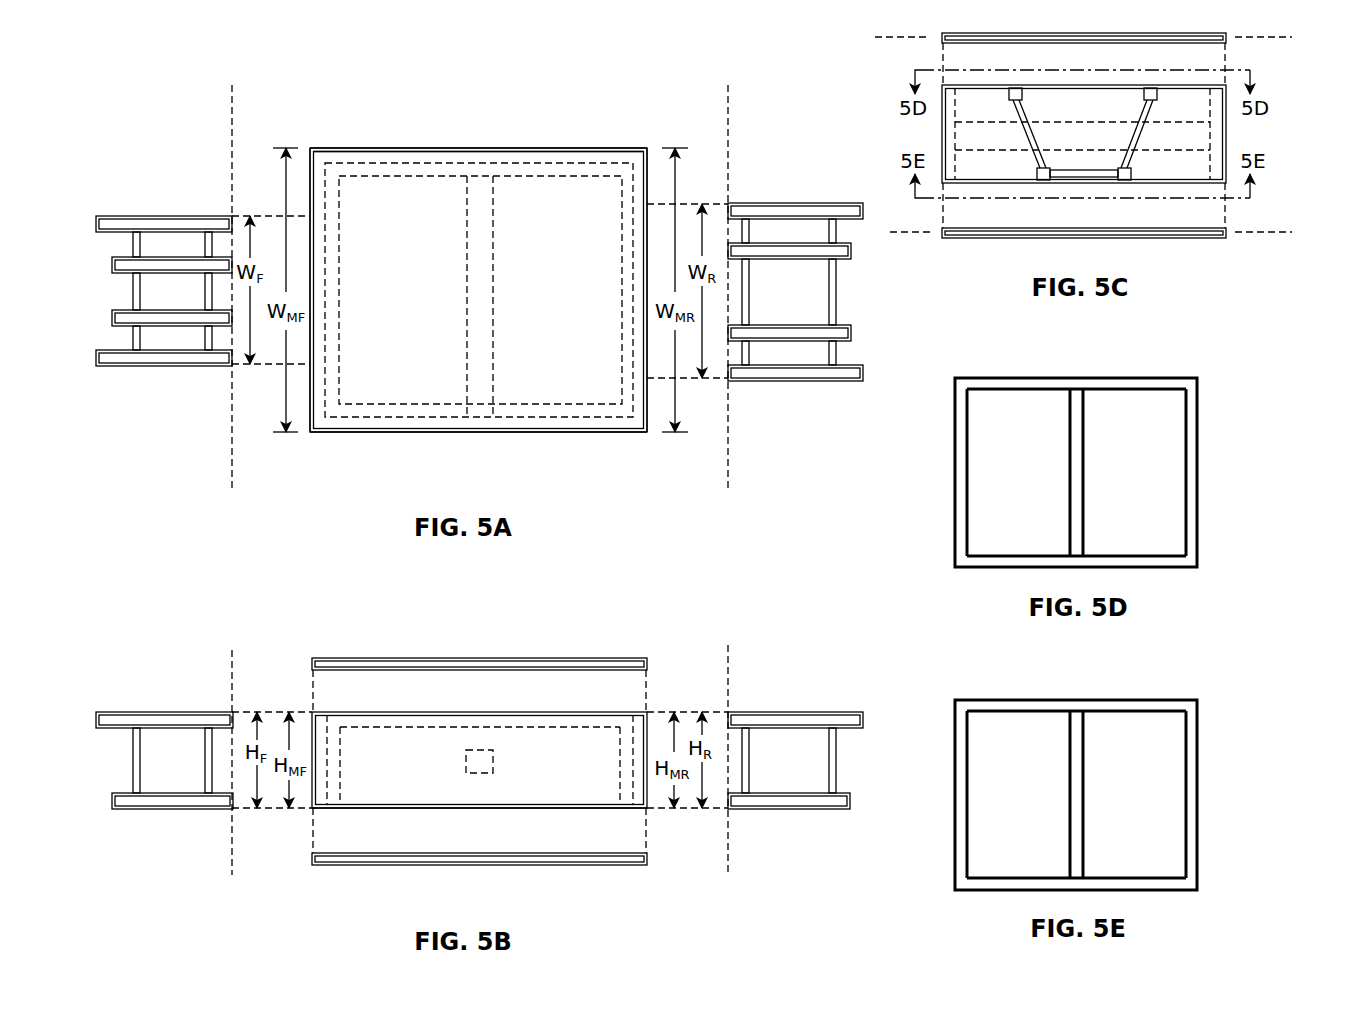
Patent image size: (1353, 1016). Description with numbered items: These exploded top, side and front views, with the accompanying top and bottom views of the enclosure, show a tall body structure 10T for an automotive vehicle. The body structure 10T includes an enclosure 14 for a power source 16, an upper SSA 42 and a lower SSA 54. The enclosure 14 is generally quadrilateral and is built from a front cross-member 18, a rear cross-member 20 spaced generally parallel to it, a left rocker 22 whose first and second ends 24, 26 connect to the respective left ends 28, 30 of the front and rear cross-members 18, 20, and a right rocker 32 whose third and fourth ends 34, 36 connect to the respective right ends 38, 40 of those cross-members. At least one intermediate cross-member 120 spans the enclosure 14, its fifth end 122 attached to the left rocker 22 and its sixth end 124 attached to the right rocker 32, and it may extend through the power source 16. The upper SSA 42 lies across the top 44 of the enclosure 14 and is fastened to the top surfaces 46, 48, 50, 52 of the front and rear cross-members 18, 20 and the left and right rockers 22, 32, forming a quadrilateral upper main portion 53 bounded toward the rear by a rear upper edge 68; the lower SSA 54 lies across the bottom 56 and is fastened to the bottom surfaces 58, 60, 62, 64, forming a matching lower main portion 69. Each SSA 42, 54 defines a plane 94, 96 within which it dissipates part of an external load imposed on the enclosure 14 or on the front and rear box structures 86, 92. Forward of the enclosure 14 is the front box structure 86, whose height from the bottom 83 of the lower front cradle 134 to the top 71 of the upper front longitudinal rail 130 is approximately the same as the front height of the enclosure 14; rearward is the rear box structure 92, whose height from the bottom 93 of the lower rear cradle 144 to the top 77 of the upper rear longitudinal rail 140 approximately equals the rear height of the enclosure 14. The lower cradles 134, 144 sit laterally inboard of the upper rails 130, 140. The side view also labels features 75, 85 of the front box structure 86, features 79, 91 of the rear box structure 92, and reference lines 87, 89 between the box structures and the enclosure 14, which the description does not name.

In FIG. 5A, the tall body structure 10T is at (185, 92).
In FIG. 5B, the tall body structure 10T is at (187, 595).
In FIG. 5C, the tall body structure 10T is at (1288, 105).
In FIG. 5A, the enclosure 14 is at (546, 268).
In FIG. 5B, the enclosure 14 is at (458, 752).
In FIG. 5D, the enclosure 14 is at (1115, 444).
In FIG. 5E, the enclosure 14 is at (1115, 766).
In FIG. 5A, the power source 16 is at (530, 178).
In FIG. 5B, the power source 16 is at (513, 727).
In FIG. 5A, the front cross-member 18 is at (318, 307).
In FIG. 5B, the front cross-member 18 is at (318, 762).
In FIG. 5C, the front cross-member 18 is at (950, 138).
In FIG. 5D, the front cross-member 18 is at (913, 472).
In FIG. 5E, the front cross-member 18 is at (911, 795).
In FIG. 5A, the rear cross-member 20 is at (638, 325).
In FIG. 5B, the rear cross-member 20 is at (642, 765).
In FIG. 5D, the rear cross-member 20 is at (1235, 472).
In FIG. 5E, the rear cross-member 20 is at (1247, 794).
In FIG. 5A, the left rocker 22 is at (440, 423).
In FIG. 5B, the left rocker 22 is at (512, 786).
In FIG. 5C, the left rocker 22 is at (1215, 135).
In FIG. 5D, the left rocker 22 is at (1076, 521).
In FIG. 5E, the left rocker 22 is at (1067, 677).
In FIG. 5A, the first end 24 is at (333, 422).
In FIG. 5A, the second end 26 is at (625, 425).
In FIG. 5A, the left end of front cross-member 28 is at (320, 412).
In FIG. 5A, the left end of rear cross-member 30 is at (635, 408).
In FIG. 5A, the right rocker 32 is at (415, 150).
In FIG. 5D, the right rocker 32 is at (1068, 355).
In FIG. 5E, the right rocker 32 is at (1076, 854).
In FIG. 5A, the third end 34 is at (335, 162).
In FIG. 5A, the fourth end 36 is at (625, 165).
In FIG. 5A, the right end of front cross-member 38 is at (320, 170).
In FIG. 5A, the right end of rear cross-member 40 is at (630, 175).
In FIG. 5A, the upper SSA 42 is at (478, 203).
In FIG. 5B, the upper SSA 42 is at (479, 631).
In FIG. 5C, the upper SSA 42 is at (1084, 51).
In FIG. 5C, the top of enclosure 44 is at (1083, 85).
In FIG. 5D, the top of enclosure 44 is at (1193, 372).
In FIG. 5D, the top surface of front cross-member 46 is at (962, 492).
In FIG. 5D, the top surface of rear cross-member 48 is at (1192, 445).
In FIG. 5D, the top surface of left rocker 50 is at (1100, 560).
In FIG. 5D, the top surface of right rocker 52 is at (1052, 385).
In FIG. 5A, the upper main portion 53 is at (523, 258).
In FIG. 5B, the upper main portion 53 is at (487, 657).
In FIG. 5C, the upper main portion 53 is at (1068, 42).
In FIG. 5B, the lower SSA 54 is at (479, 889).
In FIG. 5C, the lower SSA 54 is at (1073, 254).
In FIG. 5C, the bottom of enclosure 56 is at (1140, 183).
In FIG. 5E, the bottom of enclosure 56 is at (1193, 693).
In FIG. 5E, the bottom surface of front cross-member 58 is at (962, 830).
In FIG. 5E, the bottom surface of rear cross-member 60 is at (1192, 803).
In FIG. 5E, the bottom surface of left rocker 62 is at (1047, 707).
In FIG. 5E, the bottom surface of right rocker 64 is at (1098, 882).
In FIG. 5A, the rear upper edge 68 is at (650, 410).
In FIG. 5B, the lower main portion 69 is at (520, 866).
In FIG. 5C, the lower main portion 69 is at (1018, 238).
In FIG. 5B, the top of upper front longitudinal rails 71 is at (163, 688).
In FIG. 5B, the front rack left post 75 is at (193, 732).
In FIG. 5B, the top of upper rear longitudinal rails 77 is at (818, 696).
In FIG. 5B, the rear rack left post 79 is at (770, 728).
In FIG. 5B, the bottom of lower front cradles 83 is at (159, 826).
In FIG. 5B, the front rack right post 85 is at (195, 792).
In FIG. 5A, the front box structure 86 is at (188, 167).
In FIG. 5B, the front box structure 86 is at (159, 733).
In FIG. 5A, the front reference plane 87 is at (233, 113).
In FIG. 5B, the front reference plane 87 is at (230, 855).
In FIG. 5A, the rear reference plane 89 is at (733, 122).
In FIG. 5B, the rear reference plane 89 is at (733, 845).
In FIG. 5B, the rear rack right post 91 is at (768, 793).
In FIG. 5A, the rear box structure 92 is at (773, 168).
In FIG. 5B, the rear box structure 92 is at (818, 725).
In FIG. 5B, the bottom of lower rear cradles 93 is at (816, 801).
In FIG. 5C, the plane of upper SSA 94 is at (917, 38).
In FIG. 5C, the plane of lower SSA 96 is at (1257, 235).
In FIG. 5A, the intermediate cross-member 120 is at (439, 296).
In FIG. 5B, the intermediate cross-member 120 is at (467, 765).
In FIG. 5C, the intermediate cross-member 120 is at (1115, 135).
In FIG. 5D, the intermediate cross-member 120 is at (1034, 472).
In FIG. 5E, the intermediate cross-member 120 is at (1034, 794).
In FIG. 5A, the fifth end 122 is at (470, 385).
In FIG. 5D, the fifth end 122 is at (1075, 540).
In FIG. 5E, the fifth end 122 is at (1074, 727).
In FIG. 5A, the sixth end 124 is at (444, 296).
In FIG. 5D, the sixth end 124 is at (1034, 472).
In FIG. 5E, the sixth end 124 is at (1034, 794).
In FIG. 5B, the left upper longitudinal front rail 130 is at (165, 722).
In FIG. 5B, the left lower longitudinal front rail 134 is at (157, 800).
In FIG. 5B, the left upper longitudinal rear rail 140 is at (825, 720).
In FIG. 5B, the left lower longitudinal rear rail 144 is at (845, 805).